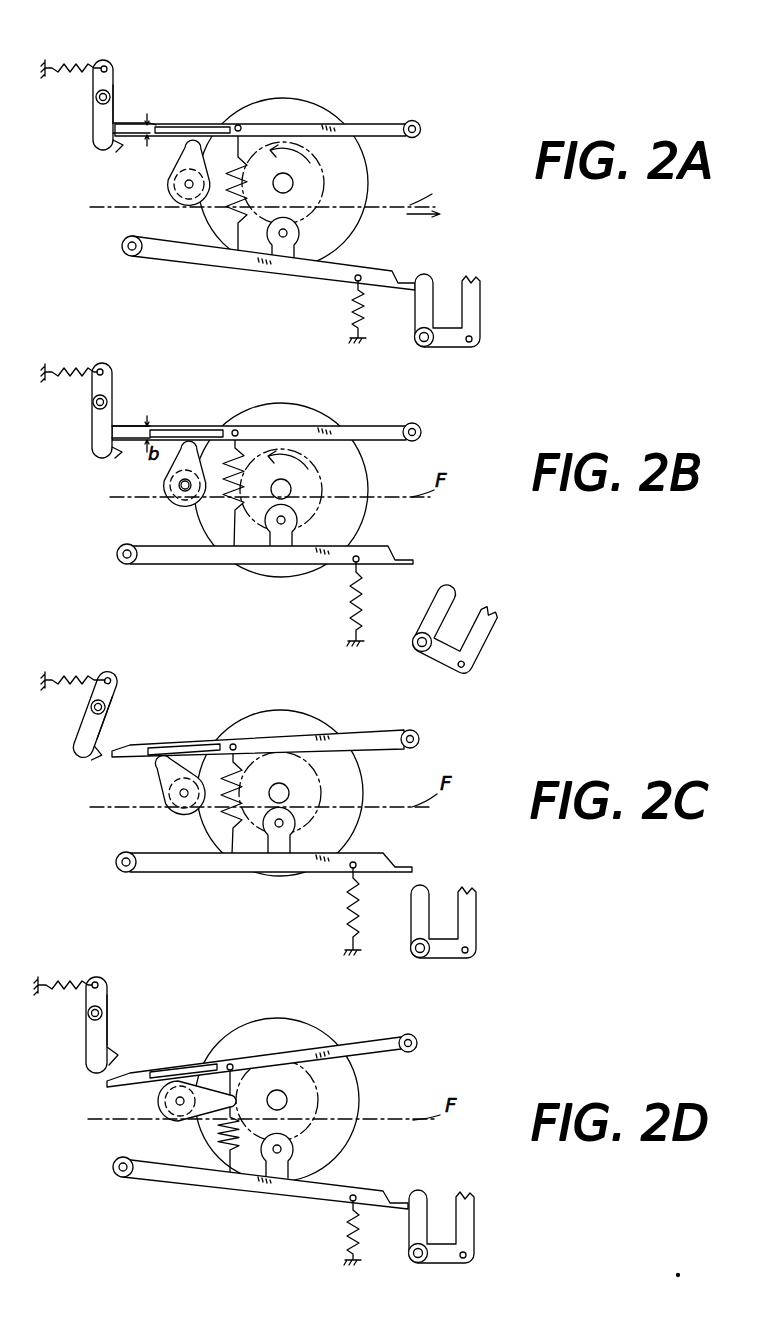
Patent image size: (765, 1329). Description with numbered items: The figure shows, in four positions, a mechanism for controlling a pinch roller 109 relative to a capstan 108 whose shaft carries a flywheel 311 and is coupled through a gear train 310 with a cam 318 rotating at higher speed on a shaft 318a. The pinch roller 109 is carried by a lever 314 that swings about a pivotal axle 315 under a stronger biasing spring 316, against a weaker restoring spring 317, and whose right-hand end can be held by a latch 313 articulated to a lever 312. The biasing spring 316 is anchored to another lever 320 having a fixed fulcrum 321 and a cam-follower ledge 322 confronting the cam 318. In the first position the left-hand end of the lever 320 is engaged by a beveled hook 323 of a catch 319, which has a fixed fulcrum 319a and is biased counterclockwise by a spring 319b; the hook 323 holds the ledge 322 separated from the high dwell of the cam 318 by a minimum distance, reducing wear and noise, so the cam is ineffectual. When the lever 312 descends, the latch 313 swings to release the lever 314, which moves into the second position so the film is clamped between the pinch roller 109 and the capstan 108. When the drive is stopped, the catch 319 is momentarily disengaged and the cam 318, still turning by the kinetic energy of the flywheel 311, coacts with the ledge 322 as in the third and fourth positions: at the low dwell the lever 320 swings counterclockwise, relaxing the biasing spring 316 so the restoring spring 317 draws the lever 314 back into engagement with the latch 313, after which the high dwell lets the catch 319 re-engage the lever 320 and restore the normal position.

In FIG. 2A, the capstan 108 is at (293, 181).
In FIG. 2B, the capstan 108 is at (291, 488).
In FIG. 2C, the capstan 108 is at (291, 792).
In FIG. 2D, the capstan 108 is at (289, 1100).
In FIG. 2A, the pinch roller 109 is at (300, 236).
In FIG. 2B, the pinch roller 109 is at (292, 516).
In FIG. 2C, the pinch roller 109 is at (300, 826).
In FIG. 2D, the pinch roller 109 is at (300, 1150).
In FIG. 2A, the gear train 310 is at (165, 208).
In FIG. 2A, the flywheel 311 is at (352, 222).
In FIG. 2B, the flywheel 311 is at (352, 516).
In FIG. 2C, the flywheel 311 is at (350, 816).
In FIG. 2D, the flywheel 311 is at (350, 1145).
In FIG. 2A, the lever 312 is at (479, 292).
In FIG. 2B, the lever 312 is at (472, 638).
In FIG. 2C, the lever 312 is at (478, 932).
In FIG. 2D, the lever 312 is at (476, 1230).
In FIG. 2A, the latch 313 is at (436, 347).
In FIG. 2B, the latch 313 is at (430, 652).
In FIG. 2C, the latch 313 is at (436, 958).
In FIG. 2D, the latch 313 is at (436, 1266).
In FIG. 2A, the lever 314 is at (163, 262).
In FIG. 2B, the lever 314 is at (165, 566).
In FIG. 2C, the lever 314 is at (165, 873).
In FIG. 2D, the lever 314 is at (180, 1187).
In FIG. 2A, the pivotal axle 315 is at (122, 250).
In FIG. 2B, the pivotal axle 315 is at (122, 562).
In FIG. 2C, the pivotal axle 315 is at (122, 866).
In FIG. 2D, the pivotal axle 315 is at (118, 1177).
In FIG. 2A, the biasing spring 316 is at (232, 214).
In FIG. 2B, the biasing spring 316 is at (230, 515).
In FIG. 2C, the biasing spring 316 is at (230, 818).
In FIG. 2D, the biasing spring 316 is at (225, 1135).
In FIG. 2A, the restoring spring 317 is at (356, 300).
In FIG. 2B, the restoring spring 317 is at (355, 608).
In FIG. 2C, the restoring spring 317 is at (350, 905).
In FIG. 2D, the restoring spring 317 is at (350, 1212).
In FIG. 2A, the cam 318 is at (175, 160).
In FIG. 2B, the cam 318 is at (178, 458).
In FIG. 2C, the cam 318 is at (162, 770).
In FIG. 2D, the cam 318 is at (205, 1098).
In FIG. 2B, the shaft 318a is at (180, 488).
In FIG. 2A, the catch 319 is at (94, 142).
In FIG. 2B, the catch 319 is at (92, 440).
In FIG. 2C, the catch 319 is at (85, 727).
In FIG. 2D, the catch 319 is at (95, 1050).
In FIG. 2A, the fixed fulcrum 319a is at (115, 93).
In FIG. 2C, the fixed fulcrum 319a is at (110, 712).
In FIG. 2D, the fixed fulcrum 319a is at (107, 1010).
In FIG. 2A, the spring 319b is at (86, 60).
In FIG. 2B, the spring 319b is at (85, 368).
In FIG. 2C, the spring 319b is at (88, 668).
In FIG. 2D, the spring 319b is at (83, 961).
In FIG. 2A, the lever 320 is at (358, 123).
In FIG. 2B, the lever 320 is at (362, 426).
In FIG. 2C, the lever 320 is at (355, 733).
In FIG. 2D, the lever 320 is at (360, 1040).
In FIG. 2A, the fixed fulcrum 321 is at (419, 121).
In FIG. 2B, the fixed fulcrum 321 is at (421, 430).
In FIG. 2C, the fixed fulcrum 321 is at (420, 735).
In FIG. 2D, the fixed fulcrum 321 is at (417, 1041).
In FIG. 2A, the cam-follower ledge 322 is at (214, 126).
In FIG. 2B, the cam-follower ledge 322 is at (208, 428).
In FIG. 2C, the cam-follower ledge 322 is at (208, 745).
In FIG. 2D, the cam-follower ledge 322 is at (207, 1064).
In FIG. 2A, the hook 323 is at (113, 152).
In FIG. 2B, the hook 323 is at (112, 458).
In FIG. 2C, the hook 323 is at (85, 762).
In FIG. 2D, the hook 323 is at (105, 1072).